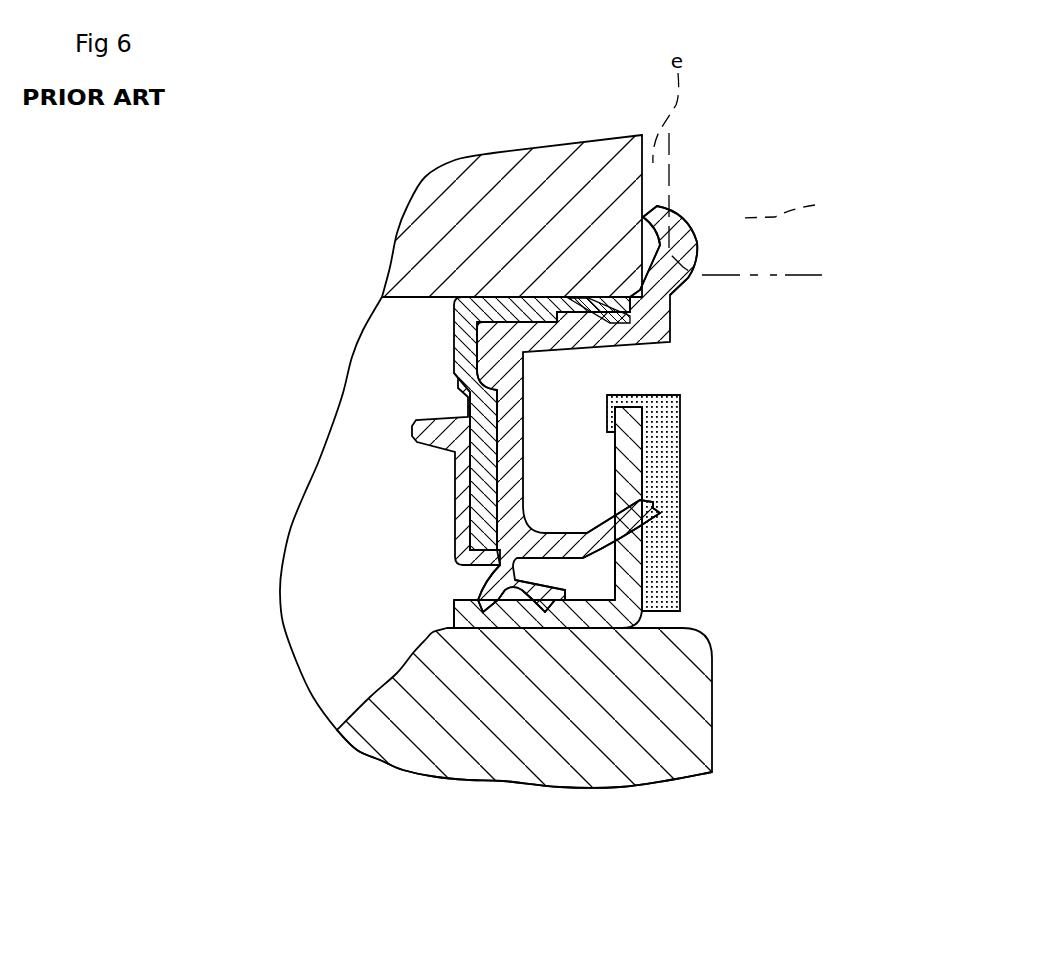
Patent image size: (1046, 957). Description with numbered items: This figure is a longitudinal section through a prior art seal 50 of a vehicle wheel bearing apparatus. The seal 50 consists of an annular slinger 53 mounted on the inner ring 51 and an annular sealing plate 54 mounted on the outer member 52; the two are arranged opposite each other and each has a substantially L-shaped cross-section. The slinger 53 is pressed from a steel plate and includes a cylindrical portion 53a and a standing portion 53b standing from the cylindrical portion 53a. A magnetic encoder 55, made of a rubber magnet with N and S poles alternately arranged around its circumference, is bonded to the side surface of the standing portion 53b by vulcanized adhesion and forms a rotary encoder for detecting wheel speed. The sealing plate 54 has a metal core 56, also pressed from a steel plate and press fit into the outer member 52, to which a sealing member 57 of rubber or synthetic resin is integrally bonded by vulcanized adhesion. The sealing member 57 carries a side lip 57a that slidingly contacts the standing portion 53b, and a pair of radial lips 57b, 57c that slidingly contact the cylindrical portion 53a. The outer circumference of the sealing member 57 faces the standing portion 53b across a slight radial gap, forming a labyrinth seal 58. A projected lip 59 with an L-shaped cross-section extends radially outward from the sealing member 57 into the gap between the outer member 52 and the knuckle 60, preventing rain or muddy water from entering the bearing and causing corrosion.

The seal 50 is at (732, 417).
The inner ring 51 is at (647, 700).
The outer member 52 is at (560, 223).
The slinger 53 is at (667, 519).
The cylindrical portion 53a is at (655, 632).
The standing portion 53b is at (640, 555).
The sealing plate 54 is at (470, 376).
The magnetic encoder 55 is at (653, 470).
The metal core 56 is at (455, 381).
The sealing member 57 is at (460, 376).
The side lip 57a is at (640, 502).
The radial lip 57b is at (483, 595).
The radial lip 57c is at (483, 623).
The labyrinth seal 58 is at (643, 368).
The projected lip 59 is at (683, 226).
The knuckle 60 is at (815, 205).